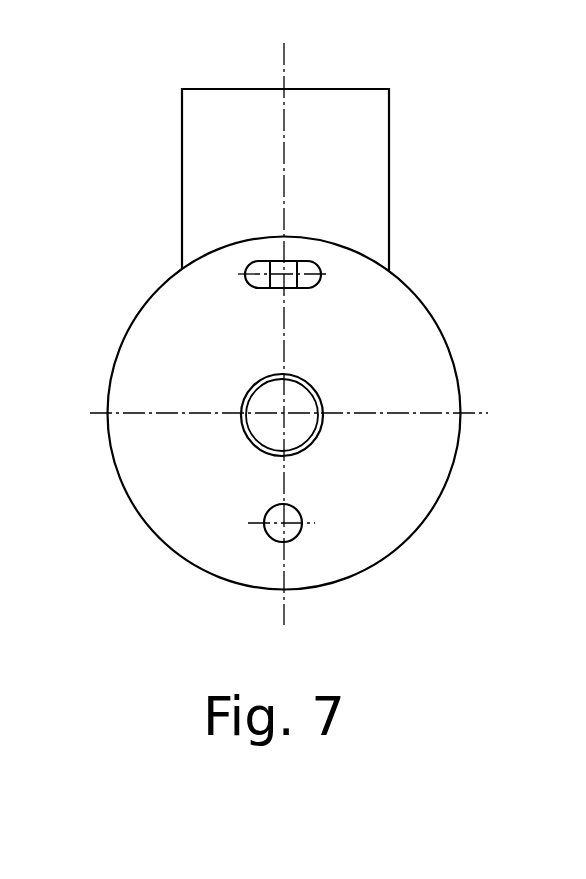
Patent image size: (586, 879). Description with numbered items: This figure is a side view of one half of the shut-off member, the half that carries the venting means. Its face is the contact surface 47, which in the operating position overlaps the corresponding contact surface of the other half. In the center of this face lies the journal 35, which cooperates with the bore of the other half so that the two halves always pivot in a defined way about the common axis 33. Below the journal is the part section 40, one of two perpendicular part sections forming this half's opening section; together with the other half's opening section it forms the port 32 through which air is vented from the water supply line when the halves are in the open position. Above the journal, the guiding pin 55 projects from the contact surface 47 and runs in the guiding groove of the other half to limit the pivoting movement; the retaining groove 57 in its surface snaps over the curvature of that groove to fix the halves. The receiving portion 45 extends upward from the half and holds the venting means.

The receiving portion 45 is at (350, 117).
The contact surface 47 is at (397, 339).
The guiding pin 55 is at (294, 257).
The retaining groove 57 is at (286, 264).
The journal 35 is at (302, 403).
The common axis 33 is at (285, 415).
The port 32 is at (425, 533).
The part section 40 is at (292, 530).